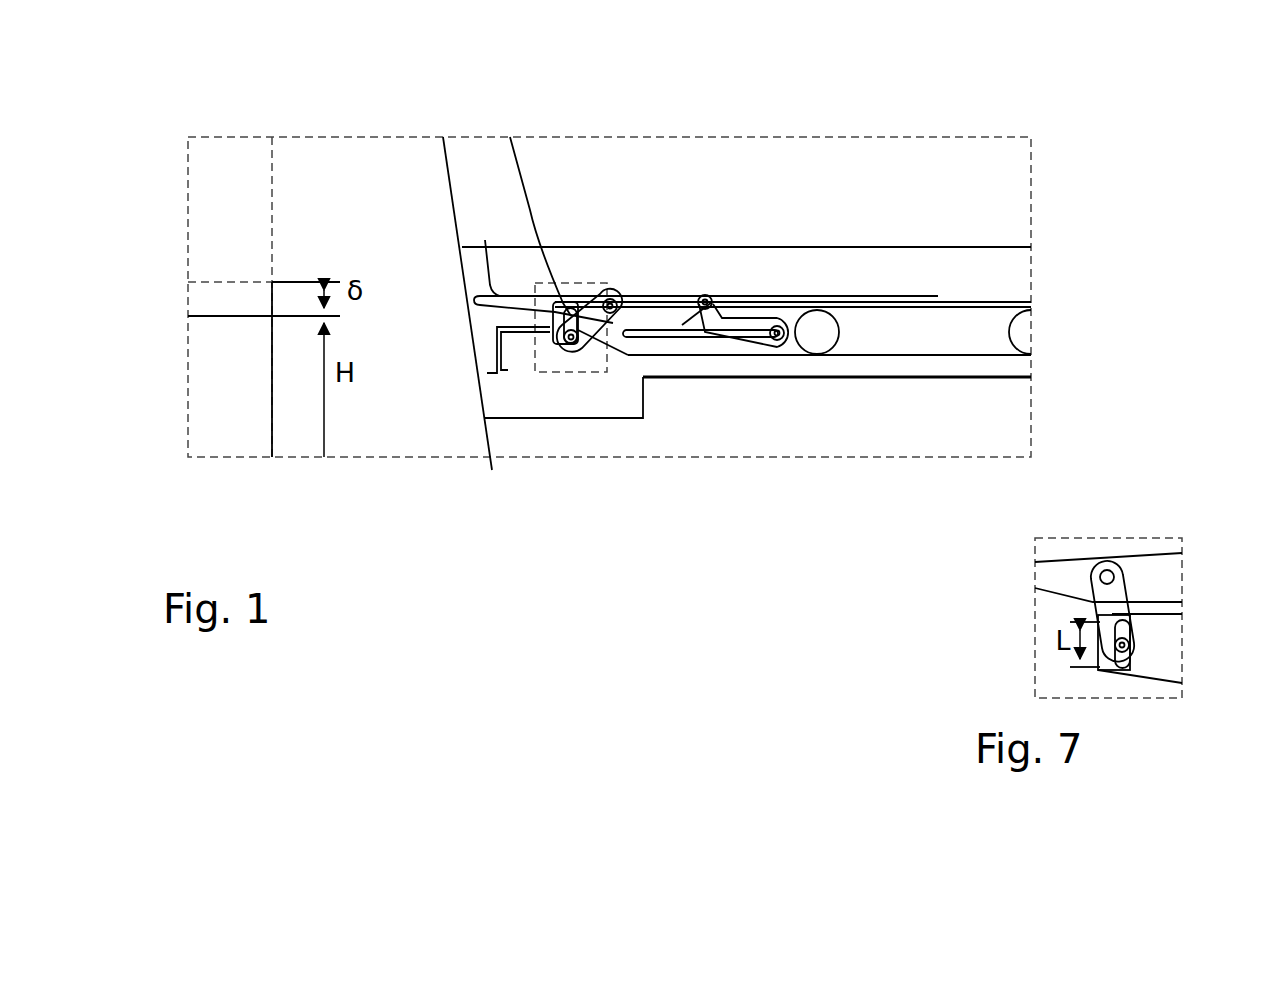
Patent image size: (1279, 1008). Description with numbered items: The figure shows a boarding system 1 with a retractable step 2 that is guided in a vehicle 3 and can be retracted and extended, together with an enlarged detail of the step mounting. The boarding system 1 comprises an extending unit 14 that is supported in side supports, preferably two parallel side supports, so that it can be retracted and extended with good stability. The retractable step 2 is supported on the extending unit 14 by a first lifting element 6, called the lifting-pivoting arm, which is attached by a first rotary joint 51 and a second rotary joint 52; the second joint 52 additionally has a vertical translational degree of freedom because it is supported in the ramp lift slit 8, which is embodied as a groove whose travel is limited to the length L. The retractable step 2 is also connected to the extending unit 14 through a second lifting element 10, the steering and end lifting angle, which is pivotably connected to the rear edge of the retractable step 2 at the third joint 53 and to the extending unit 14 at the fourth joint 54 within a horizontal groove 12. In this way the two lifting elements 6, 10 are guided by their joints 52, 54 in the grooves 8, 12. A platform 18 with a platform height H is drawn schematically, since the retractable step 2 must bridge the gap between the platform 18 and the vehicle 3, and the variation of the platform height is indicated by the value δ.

In FIG. 1, the boarding system 1 is at (604, 208).
In FIG. 1, the retractable step 2 is at (727, 296).
In FIG. 7, the retractable step 2 is at (1073, 557).
In FIG. 1, the vehicle 3 is at (456, 212).
In FIG. 1, the first lifting element 6 is at (593, 345).
In FIG. 7, the first lifting element 6 is at (1115, 592).
In FIG. 1, the ramp lift slit 8 is at (556, 309).
In FIG. 7, the ramp lift slit 8 is at (1124, 665).
In FIG. 1, the second lifting element 10 is at (733, 327).
In FIG. 1, the horizontal groove 12 is at (697, 338).
In FIG. 1, the extending unit 14 is at (907, 337).
In FIG. 7, the extending unit 14 is at (1167, 663).
In FIG. 1, the platform 18 is at (210, 372).
In FIG. 1, the first rotary joint 51 is at (613, 298).
In FIG. 7, the first rotary joint 51 is at (1110, 569).
In FIG. 1, the second rotary joint 52 is at (573, 345).
In FIG. 7, the second rotary joint 52 is at (1128, 645).
In FIG. 1, the third joint 53 is at (705, 295).
In FIG. 1, the fourth joint 54 is at (778, 340).